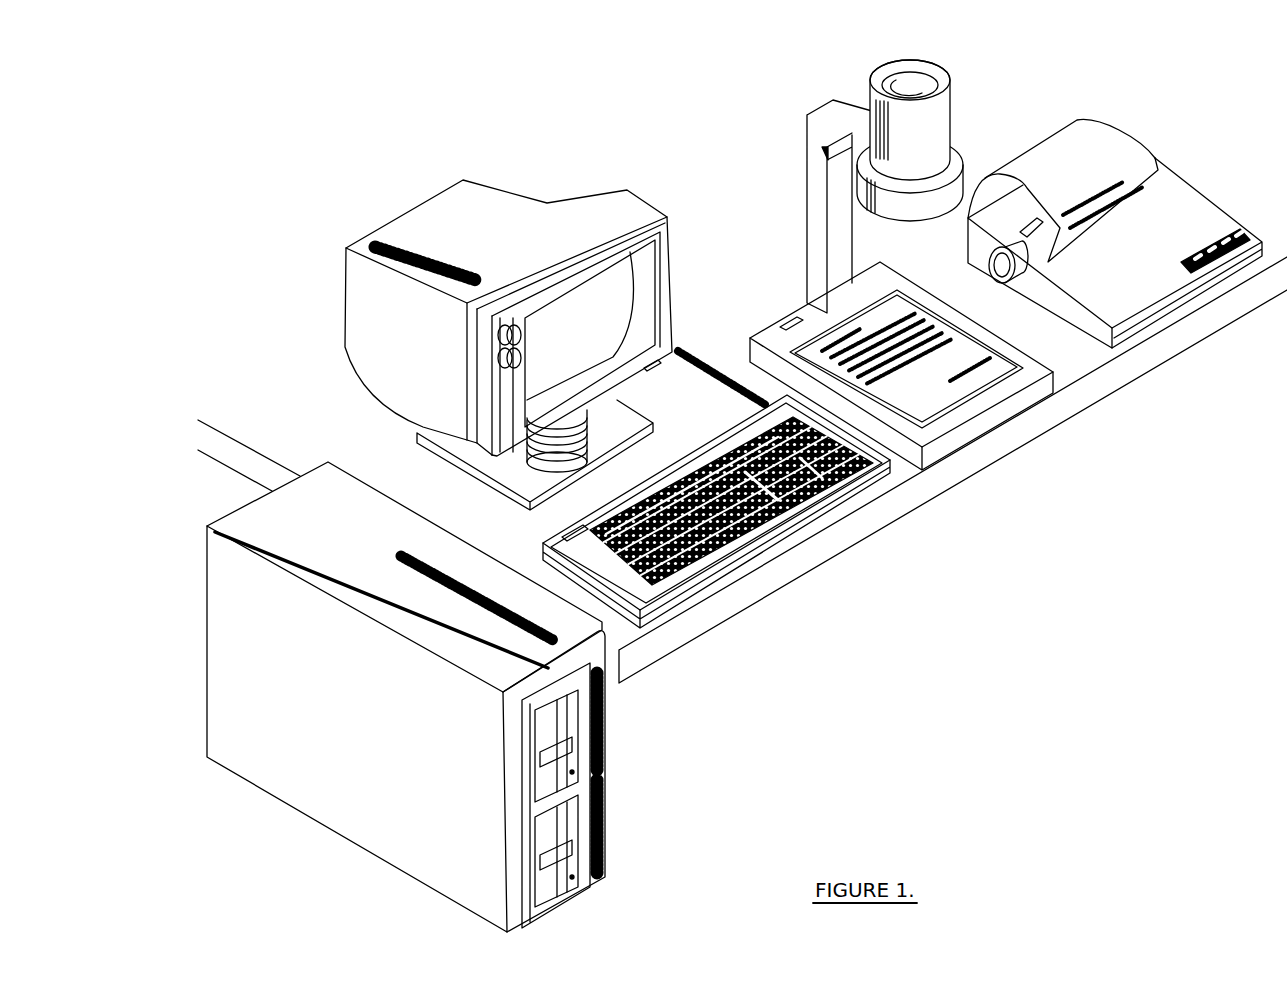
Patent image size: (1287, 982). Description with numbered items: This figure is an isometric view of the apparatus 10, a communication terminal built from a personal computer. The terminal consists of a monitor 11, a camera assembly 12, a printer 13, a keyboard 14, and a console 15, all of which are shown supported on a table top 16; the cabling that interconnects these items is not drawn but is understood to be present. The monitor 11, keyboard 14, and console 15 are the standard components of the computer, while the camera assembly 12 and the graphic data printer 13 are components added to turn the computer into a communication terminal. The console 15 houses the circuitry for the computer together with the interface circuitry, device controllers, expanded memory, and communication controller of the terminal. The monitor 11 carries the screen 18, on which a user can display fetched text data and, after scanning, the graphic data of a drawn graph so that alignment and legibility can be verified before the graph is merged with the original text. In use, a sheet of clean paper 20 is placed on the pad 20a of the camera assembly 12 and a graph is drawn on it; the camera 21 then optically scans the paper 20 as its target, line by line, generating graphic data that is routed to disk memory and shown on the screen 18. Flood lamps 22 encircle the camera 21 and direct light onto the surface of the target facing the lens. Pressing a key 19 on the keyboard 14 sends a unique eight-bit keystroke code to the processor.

The apparatus 10 is at (683, 148).
The monitor 11 is at (445, 192).
The camera assembly 12 is at (951, 103).
The printer 13 is at (1134, 328).
The keyboard 14 is at (763, 550).
The console 15 is at (607, 722).
The table top 16 is at (710, 625).
The screen 18 is at (608, 357).
The key 19 is at (735, 451).
The paper 20 is at (951, 400).
The pad 20a is at (1014, 400).
The camera 21 is at (866, 110).
The flood lamps 22 is at (885, 218).